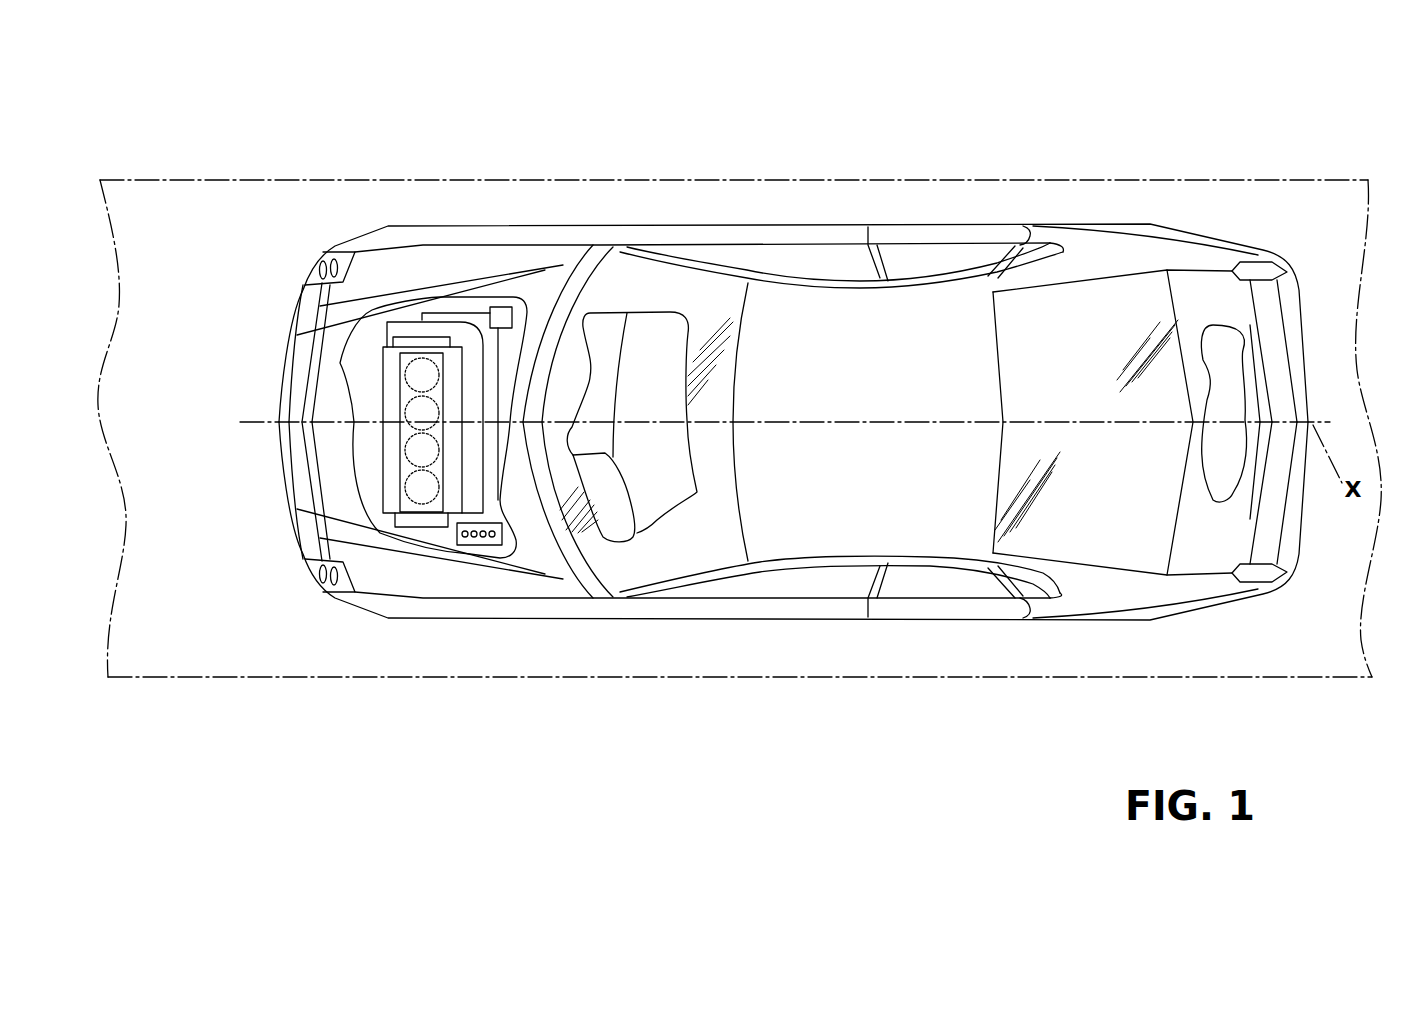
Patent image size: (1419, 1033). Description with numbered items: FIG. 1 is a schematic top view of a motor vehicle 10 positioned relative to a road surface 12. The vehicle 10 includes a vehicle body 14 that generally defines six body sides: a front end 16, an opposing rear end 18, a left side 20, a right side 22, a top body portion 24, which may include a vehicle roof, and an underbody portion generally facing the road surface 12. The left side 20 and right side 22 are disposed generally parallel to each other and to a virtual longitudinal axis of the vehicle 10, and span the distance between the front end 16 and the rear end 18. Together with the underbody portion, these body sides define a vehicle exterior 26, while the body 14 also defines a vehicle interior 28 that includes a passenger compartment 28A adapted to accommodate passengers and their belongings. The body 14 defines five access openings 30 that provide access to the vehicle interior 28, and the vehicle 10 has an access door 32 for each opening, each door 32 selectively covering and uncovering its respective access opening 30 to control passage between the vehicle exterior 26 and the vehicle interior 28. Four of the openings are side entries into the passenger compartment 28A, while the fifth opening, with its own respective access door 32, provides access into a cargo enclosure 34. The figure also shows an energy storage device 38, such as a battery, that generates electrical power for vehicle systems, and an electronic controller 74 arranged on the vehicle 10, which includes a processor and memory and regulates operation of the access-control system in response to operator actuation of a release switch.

The motor vehicle 10 is at (256, 701).
The road surface 12 is at (197, 180).
The vehicle body 14 is at (846, 320).
The front end 16 is at (287, 368).
The rear end 18 is at (1305, 373).
The left side 20 is at (726, 227).
The right side 22 is at (787, 618).
The top body portion 24 is at (852, 402).
The vehicle exterior 26 is at (935, 618).
The vehicle interior 28 is at (642, 486).
The passenger compartment 28A is at (672, 454).
The access opening 30 is at (803, 266).
The access door 32 is at (772, 227).
The cargo enclosure 34 is at (1212, 405).
The energy storage device 38 is at (478, 545).
The electronic controller 74 is at (503, 308).